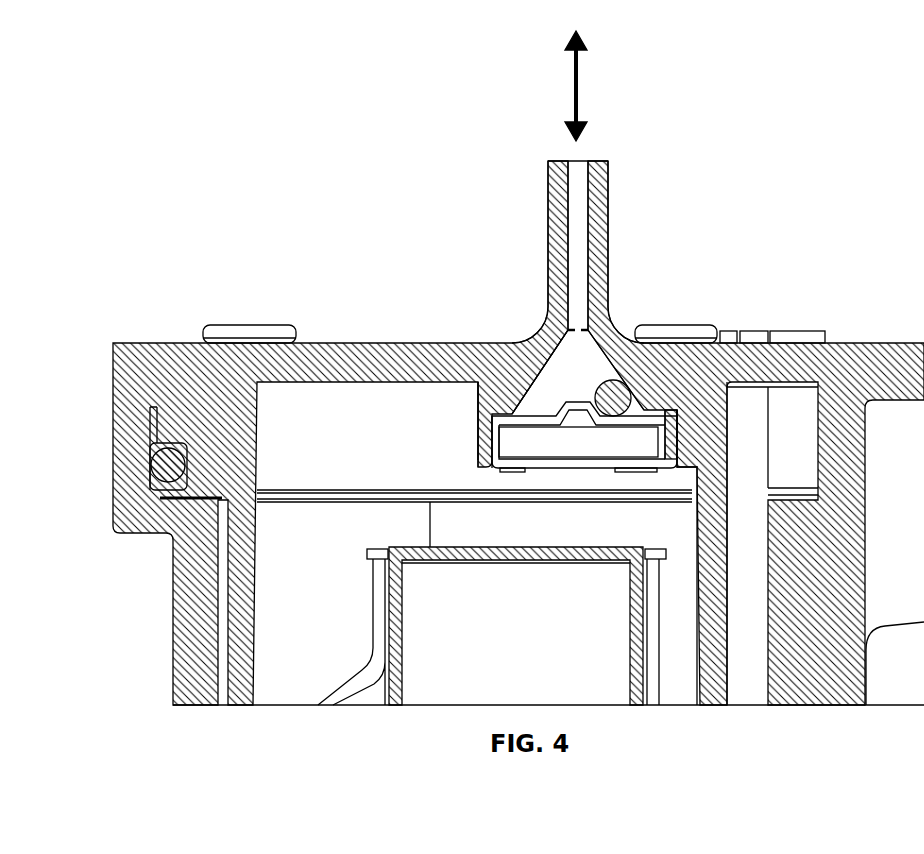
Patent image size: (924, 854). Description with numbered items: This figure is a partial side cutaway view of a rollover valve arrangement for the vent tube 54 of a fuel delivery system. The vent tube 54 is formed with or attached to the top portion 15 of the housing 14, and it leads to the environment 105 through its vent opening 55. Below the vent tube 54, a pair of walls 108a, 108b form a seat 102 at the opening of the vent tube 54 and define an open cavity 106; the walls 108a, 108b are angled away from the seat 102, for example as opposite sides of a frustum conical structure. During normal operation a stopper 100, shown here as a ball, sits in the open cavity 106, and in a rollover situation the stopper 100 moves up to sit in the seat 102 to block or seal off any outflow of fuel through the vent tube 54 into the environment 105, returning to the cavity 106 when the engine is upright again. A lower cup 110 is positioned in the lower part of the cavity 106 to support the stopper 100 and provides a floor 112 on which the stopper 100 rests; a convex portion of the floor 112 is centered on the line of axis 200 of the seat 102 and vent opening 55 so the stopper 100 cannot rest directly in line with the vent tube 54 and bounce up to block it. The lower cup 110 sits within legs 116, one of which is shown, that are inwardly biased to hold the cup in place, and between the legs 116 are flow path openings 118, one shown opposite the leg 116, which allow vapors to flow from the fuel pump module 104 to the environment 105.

The housing 14 is at (224, 226).
The top portion 15 is at (162, 347).
The vent tube 54 is at (597, 192).
The vent opening 55 is at (573, 160).
The stopper 100 is at (628, 399).
The seat 102 is at (577, 327).
The fuel pump module 104 is at (696, 388).
The environment 105 is at (828, 87).
The open cavity 106 is at (530, 392).
The wall 108a is at (532, 370).
The wall 108b is at (642, 372).
The lower cup 110 is at (673, 427).
The floor 112 is at (650, 415).
The leg 116 is at (486, 448).
The flow path opening 118 is at (680, 450).
The line of axis 200 is at (593, 86).